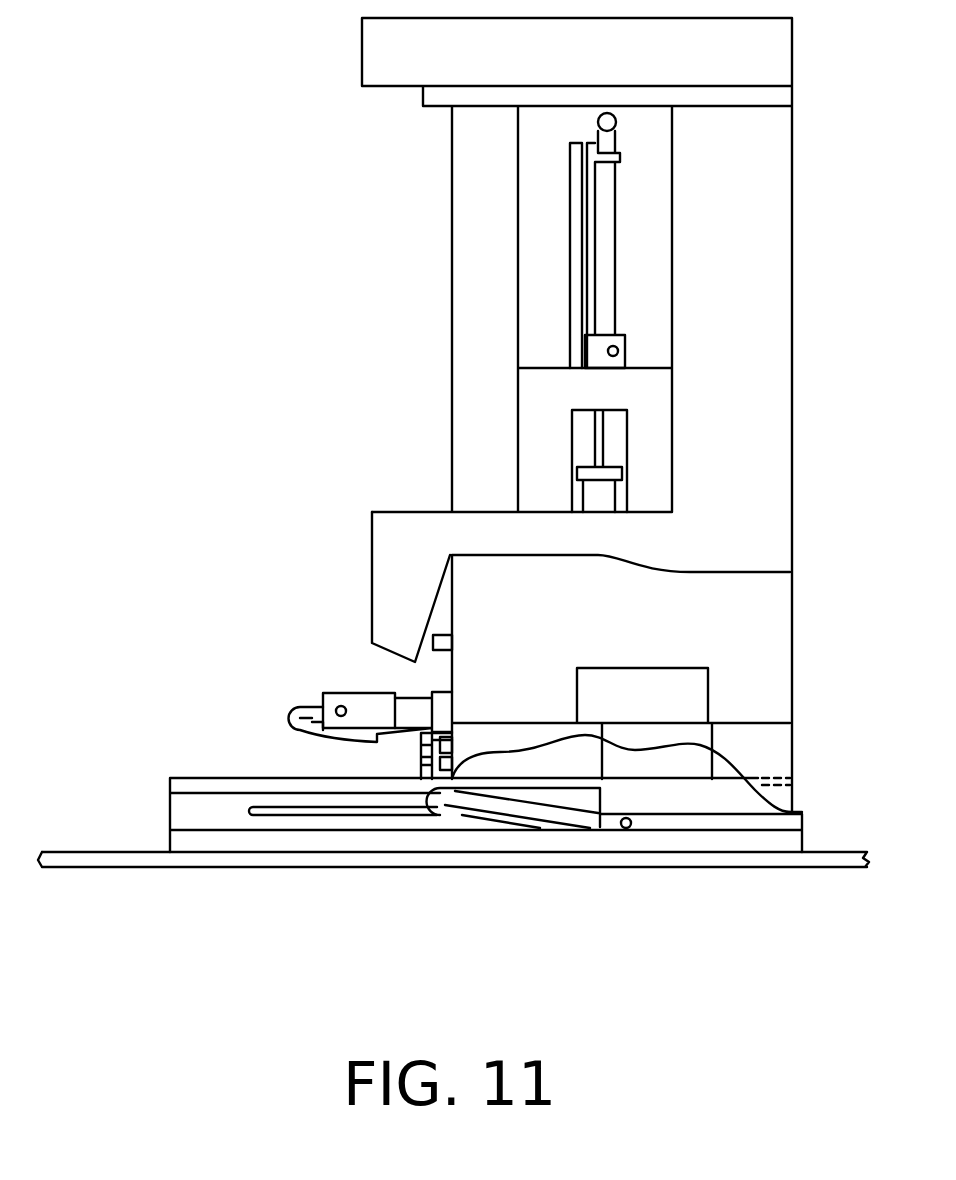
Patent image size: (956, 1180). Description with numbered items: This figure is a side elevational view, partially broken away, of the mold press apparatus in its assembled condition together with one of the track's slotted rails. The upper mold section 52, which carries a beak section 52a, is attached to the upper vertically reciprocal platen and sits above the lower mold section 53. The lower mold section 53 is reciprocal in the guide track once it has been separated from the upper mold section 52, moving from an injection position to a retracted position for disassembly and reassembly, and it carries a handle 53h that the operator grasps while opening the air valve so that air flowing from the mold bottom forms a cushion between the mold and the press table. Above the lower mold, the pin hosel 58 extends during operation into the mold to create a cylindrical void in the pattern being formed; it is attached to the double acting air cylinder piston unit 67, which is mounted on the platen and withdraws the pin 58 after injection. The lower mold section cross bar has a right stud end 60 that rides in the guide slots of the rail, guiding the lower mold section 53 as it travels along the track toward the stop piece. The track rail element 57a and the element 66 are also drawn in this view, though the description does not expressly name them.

The upper mold section 52 is at (437, 498).
The beak section 52a is at (428, 588).
The lower mold section 53 is at (618, 627).
The handle 53h is at (290, 720).
The slide plate 57a is at (293, 802).
The pin hosel 58 is at (597, 448).
The right stud end 60 is at (631, 828).
The guide rail 66 is at (250, 811).
The double acting air cylinder piston unit 67 is at (630, 266).